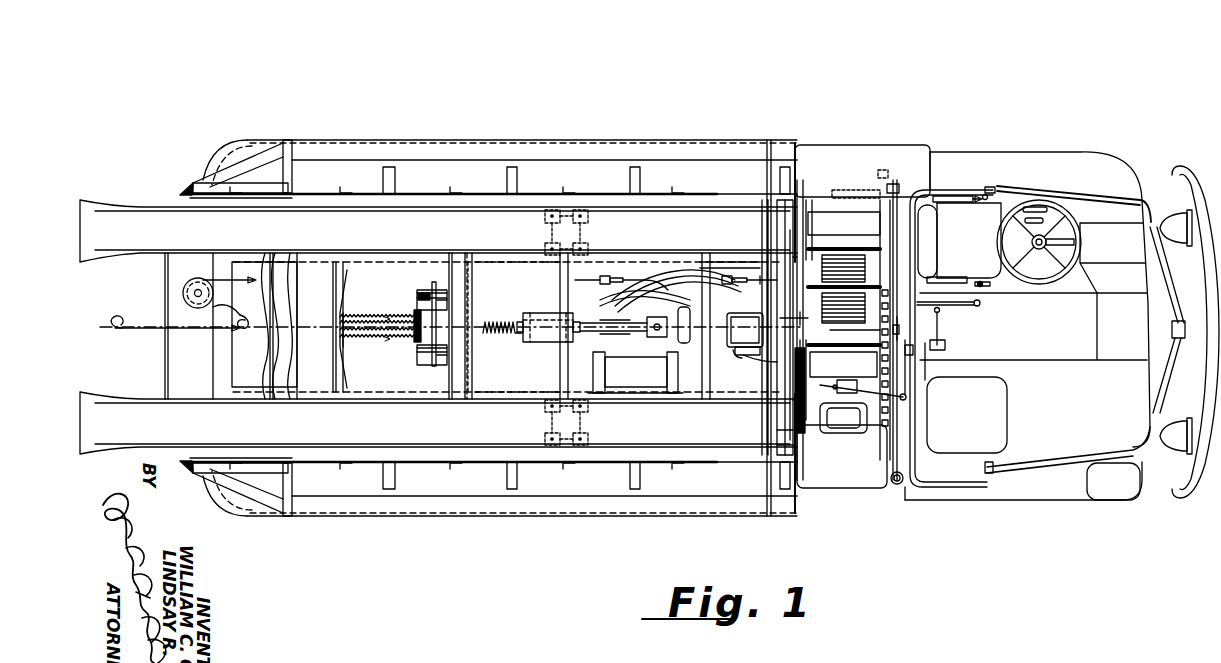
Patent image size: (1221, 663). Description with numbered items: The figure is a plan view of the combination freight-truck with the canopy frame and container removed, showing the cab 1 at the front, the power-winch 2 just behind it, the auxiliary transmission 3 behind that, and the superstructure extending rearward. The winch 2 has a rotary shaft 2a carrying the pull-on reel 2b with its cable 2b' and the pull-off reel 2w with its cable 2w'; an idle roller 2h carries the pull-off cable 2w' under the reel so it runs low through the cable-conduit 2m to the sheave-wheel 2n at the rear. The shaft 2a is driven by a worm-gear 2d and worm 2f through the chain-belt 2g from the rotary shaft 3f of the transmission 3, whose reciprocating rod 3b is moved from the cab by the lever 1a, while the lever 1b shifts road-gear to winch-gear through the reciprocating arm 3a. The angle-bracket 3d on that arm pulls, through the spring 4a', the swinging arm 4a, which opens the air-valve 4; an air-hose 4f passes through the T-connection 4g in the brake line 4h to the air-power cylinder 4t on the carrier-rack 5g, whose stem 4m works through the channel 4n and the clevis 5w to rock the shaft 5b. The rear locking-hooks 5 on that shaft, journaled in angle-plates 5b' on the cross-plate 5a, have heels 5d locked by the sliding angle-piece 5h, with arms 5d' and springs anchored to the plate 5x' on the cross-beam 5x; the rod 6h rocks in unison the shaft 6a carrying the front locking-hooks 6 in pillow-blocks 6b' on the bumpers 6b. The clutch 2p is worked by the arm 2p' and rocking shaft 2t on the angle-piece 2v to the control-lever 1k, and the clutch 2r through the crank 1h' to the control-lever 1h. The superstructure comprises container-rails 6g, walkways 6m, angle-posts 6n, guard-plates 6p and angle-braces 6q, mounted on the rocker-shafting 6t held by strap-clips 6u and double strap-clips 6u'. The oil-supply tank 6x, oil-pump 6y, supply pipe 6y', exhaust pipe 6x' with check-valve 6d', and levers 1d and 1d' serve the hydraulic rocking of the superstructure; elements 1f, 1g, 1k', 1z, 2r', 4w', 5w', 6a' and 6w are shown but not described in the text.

The cab 1 is at (1165, 205).
The speed and reverse lever 1a is at (967, 283).
The lever 1b is at (993, 213).
The lever 1d is at (1153, 292).
The lever 1d' is at (1162, 288).
The lever pivot 1f is at (980, 282).
The control rod 1g is at (980, 303).
The control-lever 1h is at (981, 408).
The crank 1h' is at (939, 373).
The control-lever 1k is at (982, 329).
The lever link 1k' is at (936, 325).
The steering wheel 1z is at (1040, 207).
The power-winch 2 is at (867, 287).
The rotary shaft 2a is at (890, 190).
The pull-on reel 2b is at (910, 242).
The pull-on cable 2b' is at (175, 375).
The worm-gear 2d is at (858, 418).
The worm 2f is at (817, 420).
The chain-belt 2g is at (803, 420).
The idle roller 2h is at (817, 260).
The cable-conduit 2m is at (247, 280).
The sheave-wheel 2n is at (197, 280).
The clutch 2p is at (850, 216).
The arm 2p' is at (974, 144).
The clutch 2r is at (821, 411).
The pivot 2r' is at (920, 477).
The rocking shaft 2t is at (937, 347).
The supporting angle-piece 2v is at (890, 305).
The pull-off reel 2w is at (843, 205).
The pull-off cable 2w' is at (280, 314).
The auxiliary transmission gearing 3 is at (733, 352).
The reciprocating arm 3a is at (788, 365).
The reciprocating rod 3b is at (777, 370).
The angle-bracket 3d is at (840, 388).
The rotary shaft 3f is at (743, 358).
The air-valve 4 is at (705, 282).
The swinging arm 4a is at (736, 256).
The helical extension spring 4a' is at (759, 256).
The air-hose 4f is at (680, 283).
The T-connection 4g is at (640, 300).
The air-brake line 4h is at (613, 300).
The operating stem 4m is at (510, 330).
The channel 4n is at (477, 380).
The air-power cylinder 4t is at (527, 300).
The conduit 4w' is at (722, 255).
The locking-hooks 5 is at (440, 352).
The cross-plate 5a is at (468, 385).
The rocking-shaft 5b is at (415, 358).
The angle-plates 5b' is at (398, 285).
The extension-heels 5d is at (413, 338).
The arms 5d' is at (421, 302).
The carrier-rack 5g is at (500, 277).
The angle-piece 5h is at (440, 293).
The slotted clevis-attachment 5w is at (380, 303).
The spring end 5w' is at (372, 325).
The cross-beam 5x is at (282, 344).
The attachment-plate 5x' is at (355, 352).
The front locking-hooks 6 is at (785, 440).
The rocking shaft 6a is at (768, 497).
The frame connection 6a' is at (808, 320).
The container-bumpers 6b is at (813, 325).
The pillow-blocks 6b' is at (791, 325).
The check-valve 6d' is at (635, 393).
The container-rails 6g is at (157, 398).
The rod 6h is at (548, 275).
The walkways 6m is at (527, 495).
The angle-posts 6n is at (563, 467).
The guard-plates 6p is at (617, 463).
The angle-braces 6q is at (507, 483).
The rocker-shafting 6t is at (565, 350).
The strap-clips 6u is at (545, 328).
The double strap-clips 6u' is at (540, 328).
The cross bar 6w is at (277, 347).
The oil-supply tank 6x is at (661, 371).
The exhaust oil-pipe 6x' is at (333, 348).
The oil-pump 6y is at (745, 321).
The oil-supply pipe 6y' is at (505, 332).